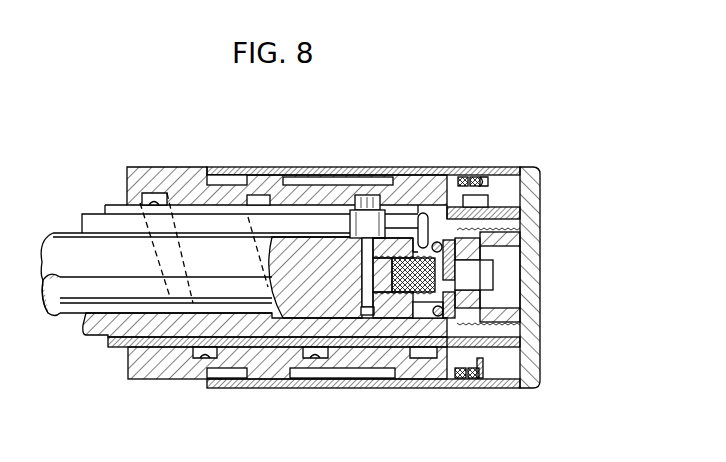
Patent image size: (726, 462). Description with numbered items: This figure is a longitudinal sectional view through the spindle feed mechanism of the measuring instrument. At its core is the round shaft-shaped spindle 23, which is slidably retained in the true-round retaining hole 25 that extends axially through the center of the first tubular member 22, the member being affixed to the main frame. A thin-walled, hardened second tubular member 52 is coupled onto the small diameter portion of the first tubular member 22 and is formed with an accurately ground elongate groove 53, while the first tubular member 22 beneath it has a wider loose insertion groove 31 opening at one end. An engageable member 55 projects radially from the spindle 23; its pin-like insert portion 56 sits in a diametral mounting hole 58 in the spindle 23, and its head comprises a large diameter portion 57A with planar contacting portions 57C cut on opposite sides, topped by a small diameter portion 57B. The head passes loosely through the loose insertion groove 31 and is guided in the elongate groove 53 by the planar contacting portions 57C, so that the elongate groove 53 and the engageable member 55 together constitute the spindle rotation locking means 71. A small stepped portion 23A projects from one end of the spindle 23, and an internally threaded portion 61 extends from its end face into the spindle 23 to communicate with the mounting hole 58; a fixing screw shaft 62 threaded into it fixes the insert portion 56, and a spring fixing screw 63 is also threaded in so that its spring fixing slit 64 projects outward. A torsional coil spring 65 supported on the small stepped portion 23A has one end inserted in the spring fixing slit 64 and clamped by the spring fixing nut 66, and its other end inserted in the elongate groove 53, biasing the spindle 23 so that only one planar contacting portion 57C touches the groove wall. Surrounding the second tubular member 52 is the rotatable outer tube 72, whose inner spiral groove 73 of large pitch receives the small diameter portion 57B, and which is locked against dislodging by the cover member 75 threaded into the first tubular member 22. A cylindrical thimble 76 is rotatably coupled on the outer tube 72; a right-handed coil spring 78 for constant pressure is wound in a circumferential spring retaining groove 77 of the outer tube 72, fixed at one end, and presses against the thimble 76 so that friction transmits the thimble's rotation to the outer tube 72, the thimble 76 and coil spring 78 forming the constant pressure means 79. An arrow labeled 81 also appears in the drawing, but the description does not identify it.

The first tubular member 22 is at (103, 330).
The spindle 23 is at (190, 247).
The small stepped portion 23A is at (426, 212).
The retaining hole 25 is at (257, 342).
The loose insertion groove 31 is at (228, 226).
The second tubular member 52 is at (115, 347).
The elongate groove 53 is at (265, 197).
The engageable member 55 is at (318, 180).
The insert portion 56 is at (348, 305).
The large diameter portion 57A is at (374, 250).
The small diameter portion 57B is at (376, 210).
The planar contacting portions 57C is at (365, 195).
The mounting hole 58 is at (380, 292).
The internally threaded portion 61 is at (430, 312).
The fixing screw shaft 62 is at (390, 305).
The spring fixing screw 63 is at (405, 318).
The spring fixing slit 64 is at (487, 272).
The torsional coil spring 65 is at (480, 358).
The spring fixing nut 66 is at (482, 305).
The spindle rotation locking means 71 is at (330, 123).
The outer tube 72 is at (537, 170).
The spiral groove 73 is at (143, 193).
The cover member 75 is at (515, 214).
The thimble 76 is at (510, 192).
The spring retaining groove 77 is at (483, 182).
The coil spring for constant pressure 78 is at (472, 182).
The constant pressure means 79 is at (540, 104).
The connector assembly 81 is at (562, 98).